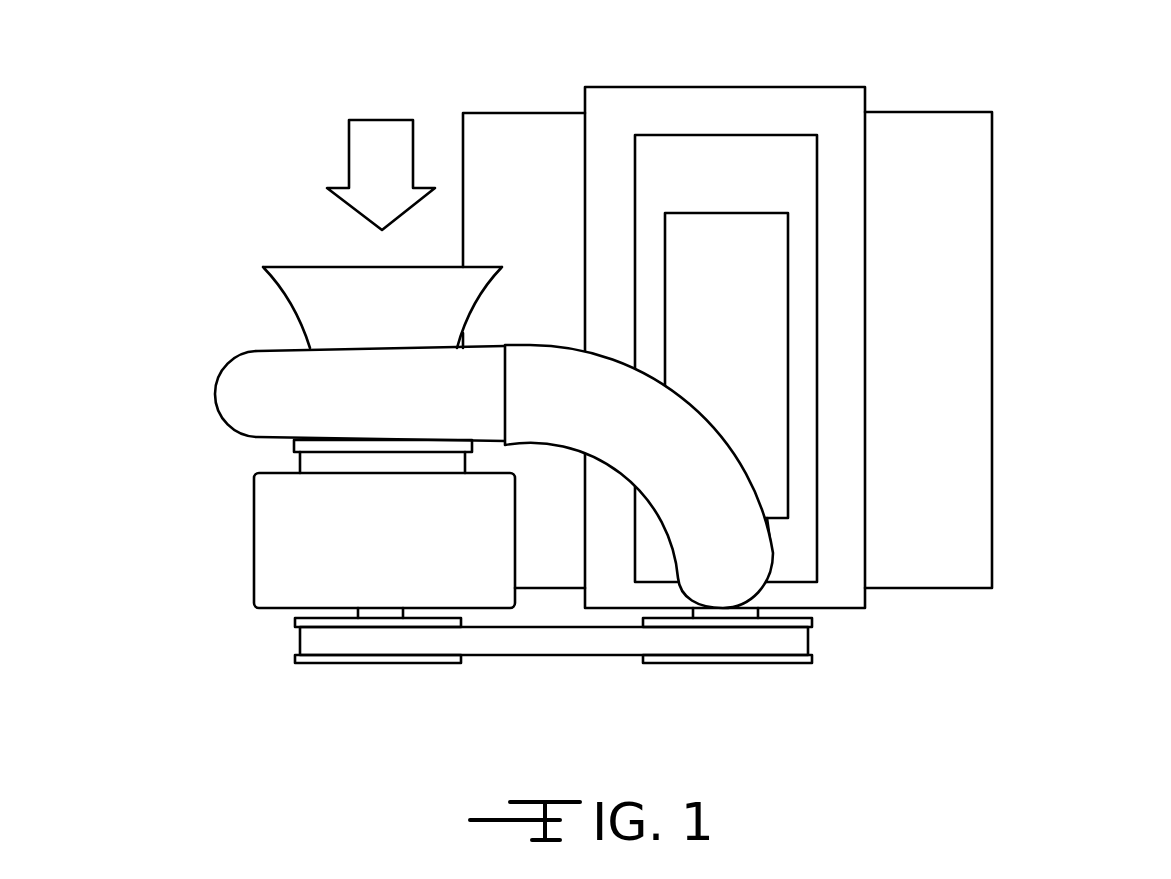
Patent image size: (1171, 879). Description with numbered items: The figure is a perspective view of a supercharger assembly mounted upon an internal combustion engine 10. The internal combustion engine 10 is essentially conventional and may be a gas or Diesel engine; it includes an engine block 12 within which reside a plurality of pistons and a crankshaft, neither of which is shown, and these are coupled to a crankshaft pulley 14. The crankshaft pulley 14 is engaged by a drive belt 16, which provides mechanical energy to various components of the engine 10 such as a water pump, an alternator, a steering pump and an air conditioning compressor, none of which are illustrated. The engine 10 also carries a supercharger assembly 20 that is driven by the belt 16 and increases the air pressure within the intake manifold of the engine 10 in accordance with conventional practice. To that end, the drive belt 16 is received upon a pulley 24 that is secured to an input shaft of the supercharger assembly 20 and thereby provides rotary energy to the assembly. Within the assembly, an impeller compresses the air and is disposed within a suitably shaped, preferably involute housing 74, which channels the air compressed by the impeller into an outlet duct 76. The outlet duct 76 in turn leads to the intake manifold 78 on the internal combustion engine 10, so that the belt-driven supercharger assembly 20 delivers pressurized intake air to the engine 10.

The internal combustion engine 10 is at (1007, 113).
The engine block 12 is at (935, 417).
The crankshaft pulley 14 is at (703, 663).
The drive belt 16 is at (532, 638).
The supercharger assembly 20 is at (233, 573).
The pulley 24 is at (368, 663).
The involute housing 74 is at (253, 379).
The outlet duct 76 is at (594, 419).
The intake manifold 78 is at (698, 333).